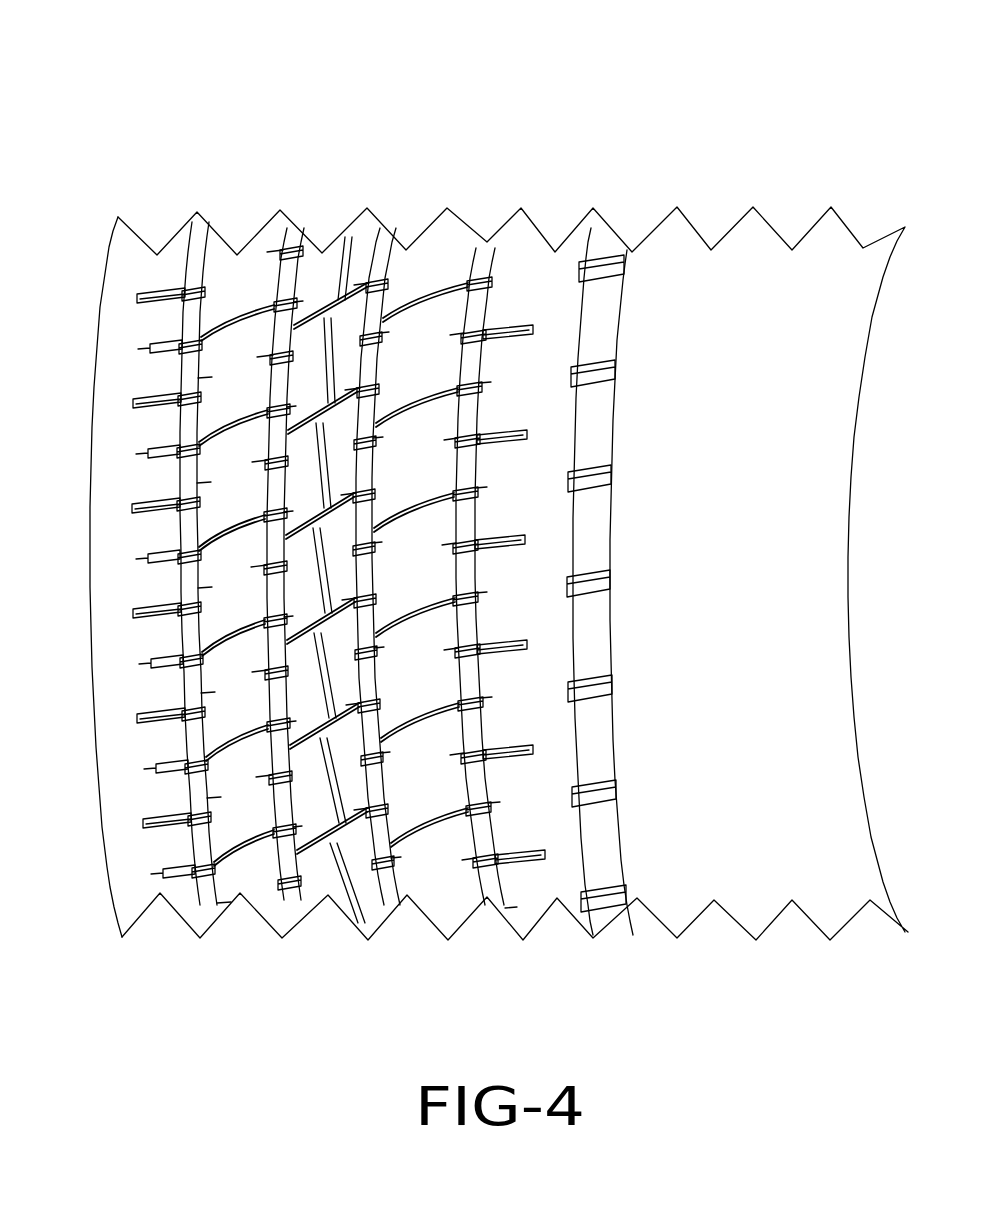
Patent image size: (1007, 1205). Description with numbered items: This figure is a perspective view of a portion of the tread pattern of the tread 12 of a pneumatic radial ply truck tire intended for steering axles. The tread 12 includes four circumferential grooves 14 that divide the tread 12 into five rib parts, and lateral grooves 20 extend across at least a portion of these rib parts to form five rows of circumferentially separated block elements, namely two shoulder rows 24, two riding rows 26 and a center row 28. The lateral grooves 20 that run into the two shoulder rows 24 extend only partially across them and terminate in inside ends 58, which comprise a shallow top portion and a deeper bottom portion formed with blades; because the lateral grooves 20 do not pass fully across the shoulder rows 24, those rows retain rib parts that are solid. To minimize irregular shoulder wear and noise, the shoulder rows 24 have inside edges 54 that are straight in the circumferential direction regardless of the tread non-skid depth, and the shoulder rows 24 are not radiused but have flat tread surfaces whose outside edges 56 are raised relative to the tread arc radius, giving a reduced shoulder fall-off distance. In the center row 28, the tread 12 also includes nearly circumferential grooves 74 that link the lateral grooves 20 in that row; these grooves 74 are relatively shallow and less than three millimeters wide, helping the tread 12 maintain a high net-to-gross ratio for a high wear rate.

The tread 12 is at (477, 124).
The circumferential grooves 14 is at (213, 918).
The lateral grooves 20 is at (323, 413).
The shoulder rows 24 is at (158, 202).
The riding rows 26 is at (243, 202).
The center row 28 is at (340, 202).
The inside edges 54 is at (192, 897).
The outside edges 56 is at (133, 903).
The inside ends 58 is at (162, 495).
The nearly circumferential grooves 74 is at (343, 907).